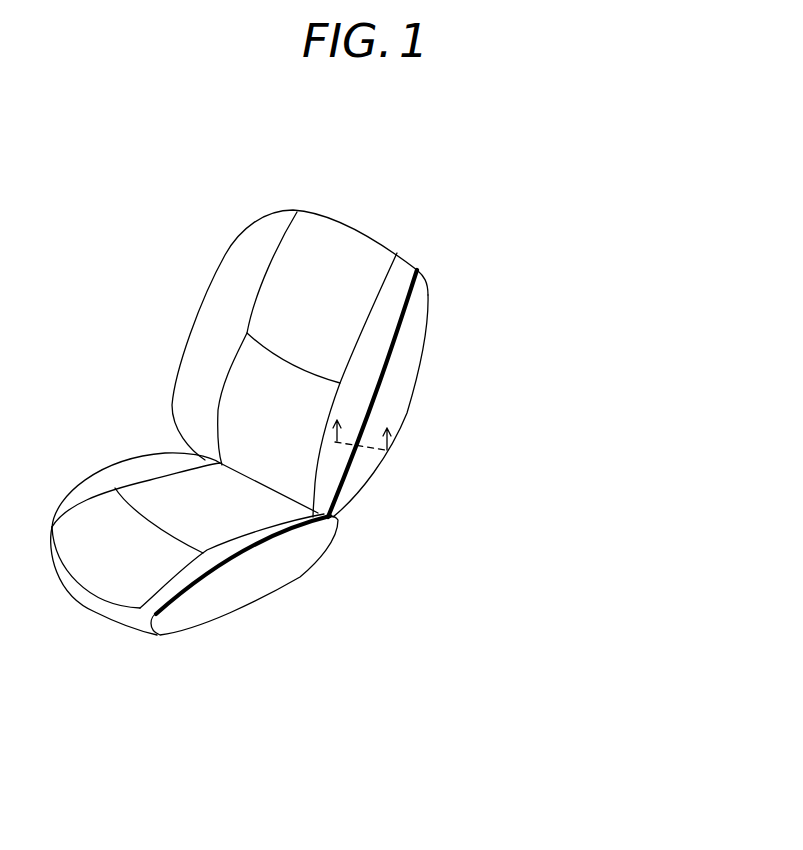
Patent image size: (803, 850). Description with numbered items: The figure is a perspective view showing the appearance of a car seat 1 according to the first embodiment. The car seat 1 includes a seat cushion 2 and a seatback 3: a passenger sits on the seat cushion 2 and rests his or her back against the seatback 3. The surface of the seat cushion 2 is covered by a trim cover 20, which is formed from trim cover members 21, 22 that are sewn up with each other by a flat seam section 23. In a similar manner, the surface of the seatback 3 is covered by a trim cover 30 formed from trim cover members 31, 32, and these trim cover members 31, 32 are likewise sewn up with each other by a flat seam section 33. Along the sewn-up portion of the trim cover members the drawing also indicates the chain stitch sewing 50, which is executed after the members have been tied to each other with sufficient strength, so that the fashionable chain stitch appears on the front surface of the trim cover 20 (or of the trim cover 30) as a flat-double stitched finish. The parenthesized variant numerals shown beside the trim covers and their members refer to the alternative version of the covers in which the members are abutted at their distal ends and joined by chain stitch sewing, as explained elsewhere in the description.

The car seat 1 is at (104, 271).
The seat cushion 2 is at (102, 512).
The seatback 3 is at (277, 305).
The trim cover 20 is at (360, 649).
The trim cover member 21 is at (263, 587).
The trim cover member 22 is at (203, 562).
The flat seam section 23 is at (280, 538).
The trim cover 30 is at (574, 316).
The trim cover member 31 is at (407, 358).
The trim cover member 32 is at (377, 323).
The flat seam section 33 is at (377, 387).
The chain stitch sewing 50 is at (353, 477).